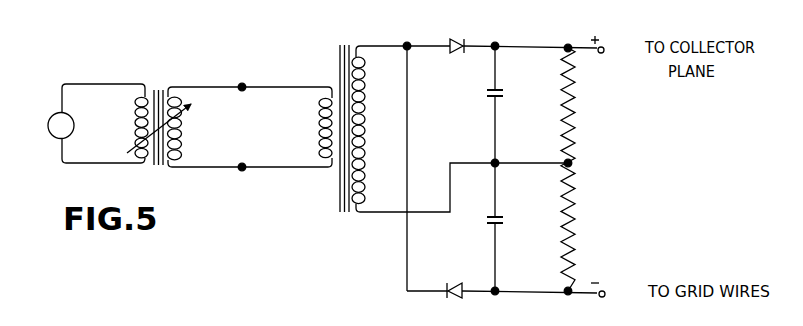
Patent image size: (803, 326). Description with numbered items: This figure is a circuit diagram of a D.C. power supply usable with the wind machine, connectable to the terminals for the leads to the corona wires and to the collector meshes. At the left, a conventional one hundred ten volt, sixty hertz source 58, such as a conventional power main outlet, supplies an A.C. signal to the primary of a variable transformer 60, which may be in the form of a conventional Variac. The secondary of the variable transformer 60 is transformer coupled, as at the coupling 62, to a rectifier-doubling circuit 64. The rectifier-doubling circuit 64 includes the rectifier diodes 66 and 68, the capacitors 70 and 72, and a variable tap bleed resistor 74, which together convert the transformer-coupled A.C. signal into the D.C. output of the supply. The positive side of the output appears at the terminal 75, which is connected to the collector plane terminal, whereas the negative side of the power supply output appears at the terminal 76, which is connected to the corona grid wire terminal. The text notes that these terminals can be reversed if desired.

The source 58 is at (52, 114).
The variable transformer 60 is at (154, 79).
The transformer coupling 62 is at (327, 82).
The rectifier-doubling circuit 64 is at (482, 40).
The rectifier diode 66 is at (448, 40).
The rectifier diode 68 is at (463, 298).
The capacitor 70 is at (488, 97).
The capacitor 72 is at (488, 227).
The variable tap bleed resistor 74 is at (576, 145).
The terminal 75 is at (604, 51).
The terminal 76 is at (605, 295).